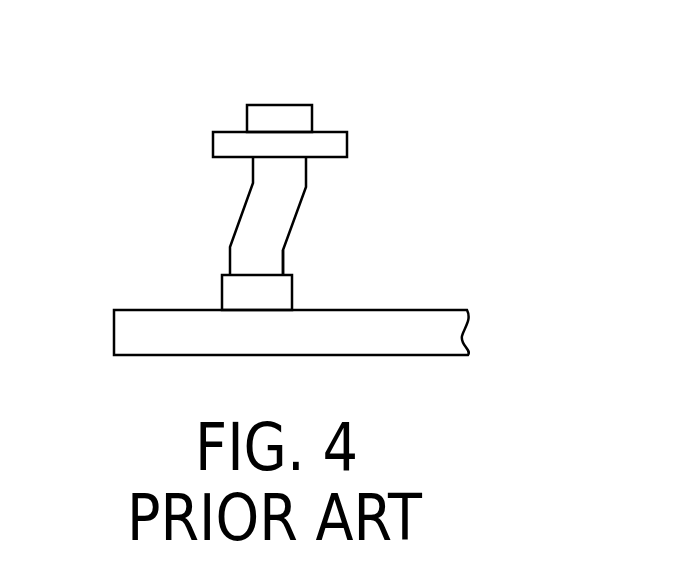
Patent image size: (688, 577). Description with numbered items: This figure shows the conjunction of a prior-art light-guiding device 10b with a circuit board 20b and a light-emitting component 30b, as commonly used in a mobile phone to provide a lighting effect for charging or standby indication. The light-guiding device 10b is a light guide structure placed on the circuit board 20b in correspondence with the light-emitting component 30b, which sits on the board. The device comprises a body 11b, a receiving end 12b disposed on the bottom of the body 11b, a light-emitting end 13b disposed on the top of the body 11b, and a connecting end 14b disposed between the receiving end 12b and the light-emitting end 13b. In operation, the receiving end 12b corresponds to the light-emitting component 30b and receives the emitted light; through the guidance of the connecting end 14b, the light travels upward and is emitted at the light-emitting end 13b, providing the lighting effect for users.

The light-guiding device 10b is at (360, 102).
The body 11b is at (333, 145).
The receiving end 12b is at (267, 263).
The light-emitting end 13b is at (276, 113).
The connecting end 14b is at (262, 215).
The circuit board 20b is at (428, 322).
The light-emitting component 30b is at (237, 292).